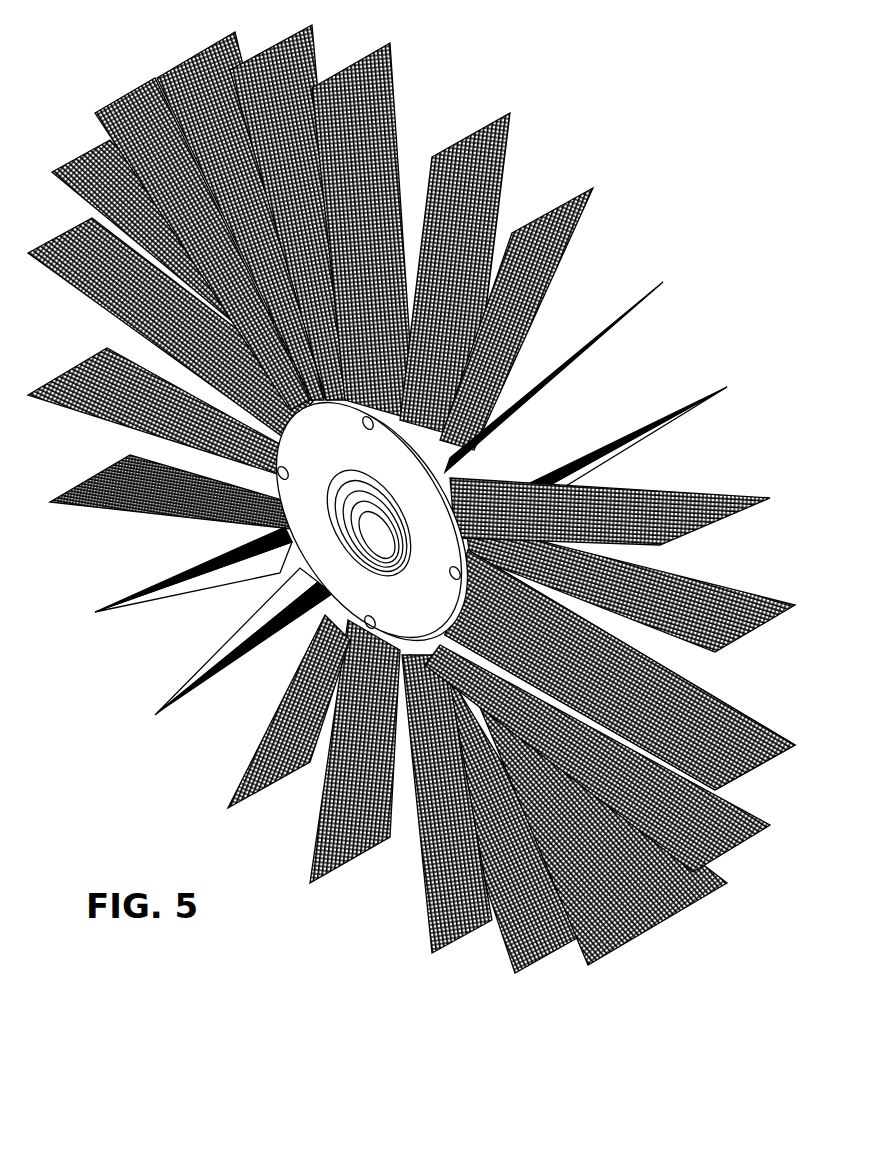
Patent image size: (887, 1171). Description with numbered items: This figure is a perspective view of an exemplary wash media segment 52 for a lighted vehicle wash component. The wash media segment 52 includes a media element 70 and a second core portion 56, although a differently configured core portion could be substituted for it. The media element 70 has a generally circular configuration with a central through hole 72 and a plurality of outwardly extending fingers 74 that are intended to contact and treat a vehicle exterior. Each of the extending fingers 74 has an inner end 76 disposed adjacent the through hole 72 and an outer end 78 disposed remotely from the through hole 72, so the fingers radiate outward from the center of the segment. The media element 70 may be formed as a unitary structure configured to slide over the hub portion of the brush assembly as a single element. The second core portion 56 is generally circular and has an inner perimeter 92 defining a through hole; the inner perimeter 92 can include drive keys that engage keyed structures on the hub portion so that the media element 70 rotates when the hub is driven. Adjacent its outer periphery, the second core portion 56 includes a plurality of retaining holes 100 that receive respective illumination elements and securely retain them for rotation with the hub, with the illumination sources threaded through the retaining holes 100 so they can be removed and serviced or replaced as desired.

The wash media segment 52 is at (411, 520).
The media element 70 is at (563, 194).
The central through hole 72 is at (565, 428).
The outwardly extending fingers 74 is at (625, 332).
The inner end 76 is at (393, 410).
The second core portion 56 is at (388, 522).
The inner perimeter 92 is at (297, 570).
The retaining holes 100 is at (440, 530).
The outer end 78 is at (452, 937).